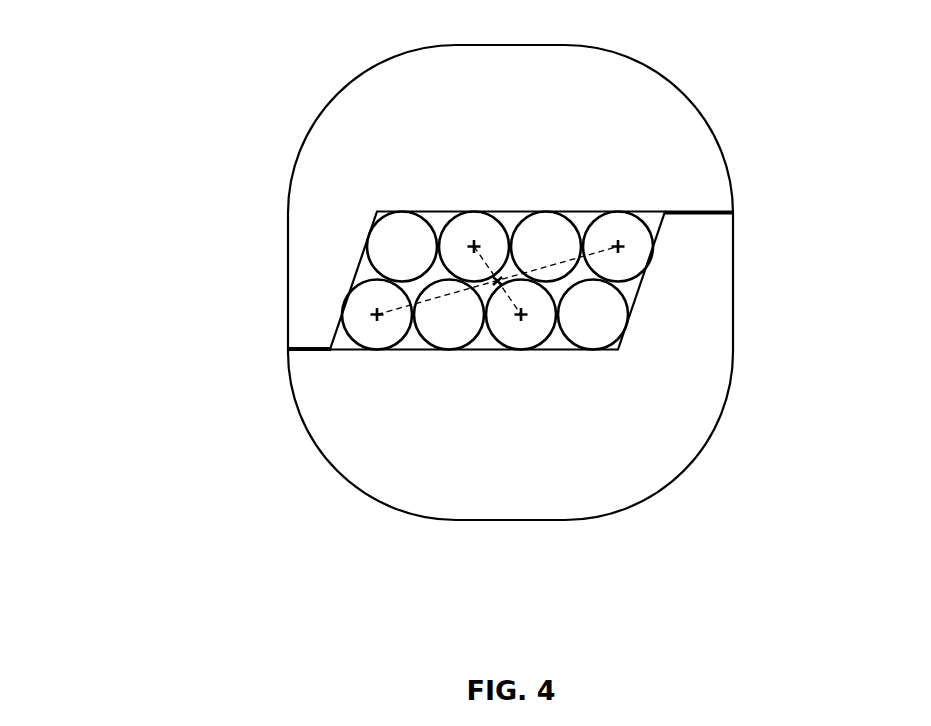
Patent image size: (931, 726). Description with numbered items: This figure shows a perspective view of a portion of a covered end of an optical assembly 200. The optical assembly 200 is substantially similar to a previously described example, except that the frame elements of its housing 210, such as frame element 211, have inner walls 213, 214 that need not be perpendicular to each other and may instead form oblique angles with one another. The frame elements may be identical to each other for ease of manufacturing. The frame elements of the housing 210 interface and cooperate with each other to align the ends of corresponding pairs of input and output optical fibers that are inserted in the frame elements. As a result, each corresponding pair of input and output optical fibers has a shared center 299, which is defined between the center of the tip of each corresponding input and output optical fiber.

The optical assembly 200 is at (130, 52).
The housing 210 is at (758, 209).
The frame element 211 is at (678, 108).
The inner wall 213 is at (437, 211).
The inner wall 214 is at (360, 270).
The shared center 299 is at (497, 281).